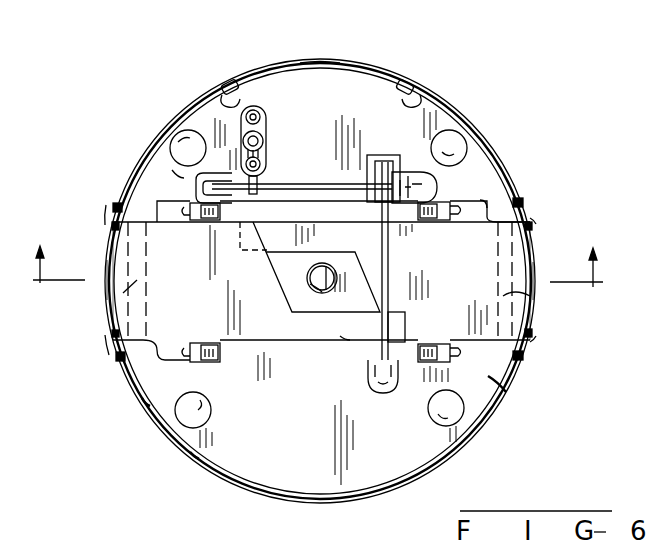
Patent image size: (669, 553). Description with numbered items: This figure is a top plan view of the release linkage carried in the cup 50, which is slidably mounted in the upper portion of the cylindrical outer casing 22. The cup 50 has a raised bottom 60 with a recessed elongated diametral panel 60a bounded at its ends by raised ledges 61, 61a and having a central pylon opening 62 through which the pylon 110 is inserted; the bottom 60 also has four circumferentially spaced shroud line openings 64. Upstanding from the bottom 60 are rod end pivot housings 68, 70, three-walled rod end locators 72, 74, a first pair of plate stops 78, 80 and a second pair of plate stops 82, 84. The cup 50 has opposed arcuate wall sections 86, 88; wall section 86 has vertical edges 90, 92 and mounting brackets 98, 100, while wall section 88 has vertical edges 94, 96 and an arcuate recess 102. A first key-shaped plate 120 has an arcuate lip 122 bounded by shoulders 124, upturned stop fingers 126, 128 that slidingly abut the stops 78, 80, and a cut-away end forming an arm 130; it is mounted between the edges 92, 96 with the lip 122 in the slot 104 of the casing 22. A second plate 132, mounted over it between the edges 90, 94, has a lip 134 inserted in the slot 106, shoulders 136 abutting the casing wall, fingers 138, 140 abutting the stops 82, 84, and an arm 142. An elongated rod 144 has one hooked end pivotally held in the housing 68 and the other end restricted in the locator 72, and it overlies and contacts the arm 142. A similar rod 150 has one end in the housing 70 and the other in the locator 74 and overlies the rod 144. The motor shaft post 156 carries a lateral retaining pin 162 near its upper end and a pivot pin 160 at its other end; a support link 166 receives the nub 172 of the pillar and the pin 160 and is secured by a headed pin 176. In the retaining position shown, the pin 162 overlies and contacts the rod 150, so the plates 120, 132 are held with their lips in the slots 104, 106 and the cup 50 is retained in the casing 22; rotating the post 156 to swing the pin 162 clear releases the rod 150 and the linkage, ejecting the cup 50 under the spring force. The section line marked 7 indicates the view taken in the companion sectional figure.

The cup 50 is at (512, 148).
The arcuate wall section 86 is at (320, 59).
The shoulders 136 is at (112, 217).
The mounting bracket 98 is at (233, 82).
The mounting bracket 100 is at (402, 88).
The shroud line openings 64 is at (183, 140).
The support link 166 is at (256, 108).
The nub 172 is at (262, 113).
The headed pin 176 is at (265, 135).
The motor shaft post 156 is at (266, 160).
The pivot pin 160 is at (262, 165).
The retaining pin 162 is at (257, 194).
The elongated rod 150 is at (318, 190).
The stop finger 138 is at (196, 187).
The rod end locator 74 is at (180, 170).
The rod end locator 72 is at (378, 155).
The elongated rod 144 is at (389, 258).
The rod end pivot housing 68 is at (393, 392).
The rod end pivot housing 70 is at (440, 188).
The plate stop 82 is at (206, 221).
The plate stop 78 is at (452, 221).
The plate stop 84 is at (188, 343).
The plate stop 80 is at (458, 345).
The stop finger 140 is at (188, 348).
The raised bottom 60 is at (358, 105).
The second plate 132 is at (200, 293).
The first generally key-shaped plate 120 is at (490, 295).
The stop finger 126 is at (484, 202).
The arm 142 is at (345, 340).
The recessed elongated diametral panel 60a is at (310, 274).
The pylon 110 is at (323, 263).
The pylon opening 62 is at (310, 288).
The arm 130 is at (283, 240).
The vertical edge 90 is at (114, 207).
The vertical edge 94 is at (116, 356).
The vertical edge 92 is at (524, 203).
The vertical edge 96 is at (524, 355).
The lip 134 is at (113, 226).
The circumferential slot 106 is at (113, 333).
The arcuate lip 122 is at (530, 229).
The circumferential slot 104 is at (535, 332).
The shoulders 124 is at (535, 222).
The arcuate wall section 88 is at (147, 408).
The arcuate recess 102 is at (193, 458).
The stop finger 128 is at (476, 372).
The section line 7- 7 is at (318, 251).
The cylindrical outer casing 22 is at (105, 268).
The raised ledge 61a is at (140, 293).
The raised ledge 61 is at (530, 296).